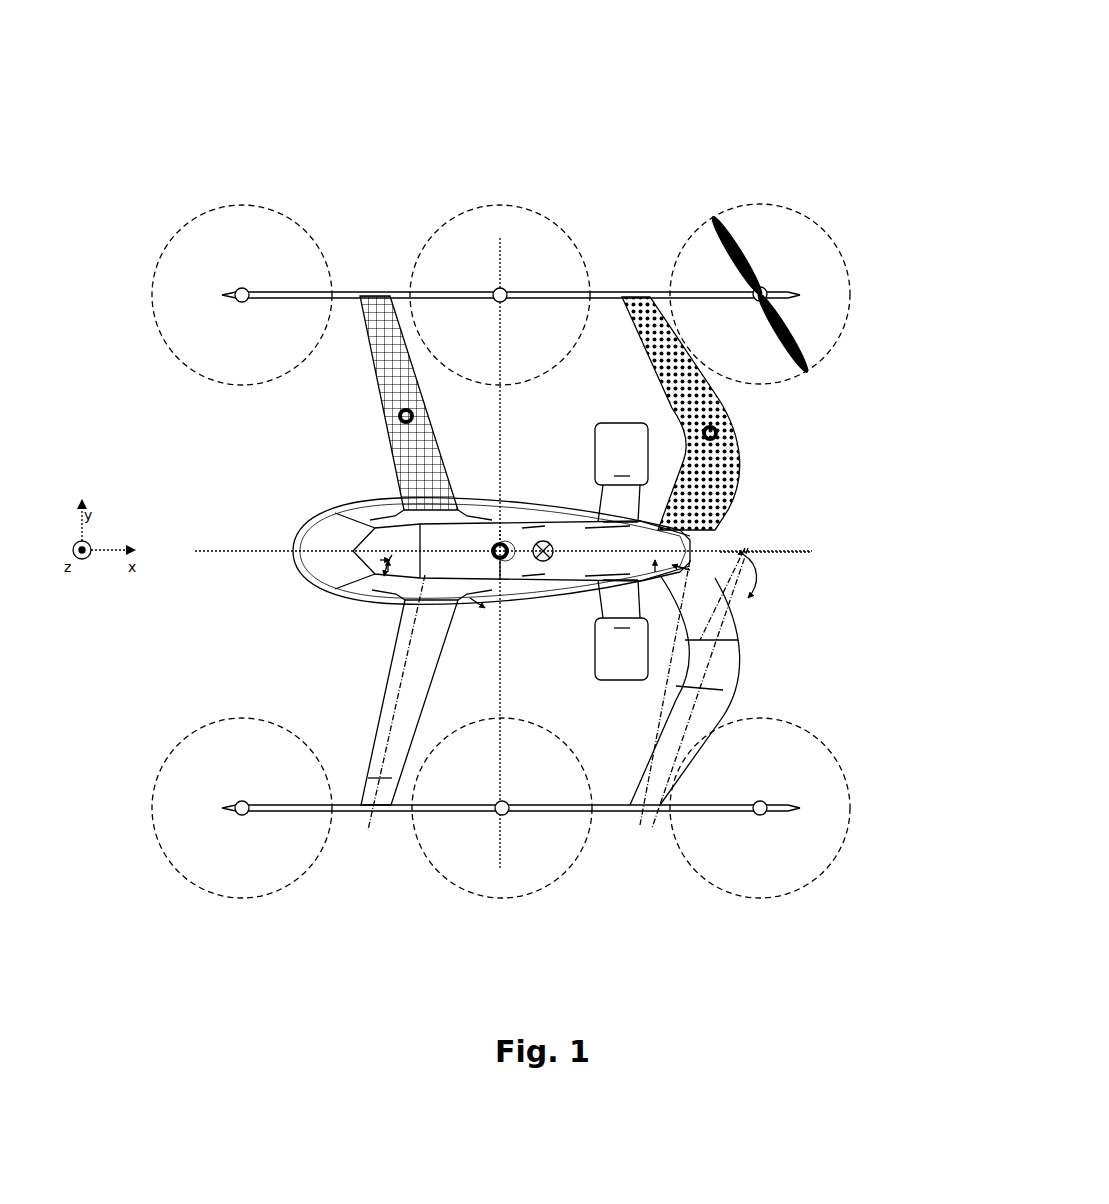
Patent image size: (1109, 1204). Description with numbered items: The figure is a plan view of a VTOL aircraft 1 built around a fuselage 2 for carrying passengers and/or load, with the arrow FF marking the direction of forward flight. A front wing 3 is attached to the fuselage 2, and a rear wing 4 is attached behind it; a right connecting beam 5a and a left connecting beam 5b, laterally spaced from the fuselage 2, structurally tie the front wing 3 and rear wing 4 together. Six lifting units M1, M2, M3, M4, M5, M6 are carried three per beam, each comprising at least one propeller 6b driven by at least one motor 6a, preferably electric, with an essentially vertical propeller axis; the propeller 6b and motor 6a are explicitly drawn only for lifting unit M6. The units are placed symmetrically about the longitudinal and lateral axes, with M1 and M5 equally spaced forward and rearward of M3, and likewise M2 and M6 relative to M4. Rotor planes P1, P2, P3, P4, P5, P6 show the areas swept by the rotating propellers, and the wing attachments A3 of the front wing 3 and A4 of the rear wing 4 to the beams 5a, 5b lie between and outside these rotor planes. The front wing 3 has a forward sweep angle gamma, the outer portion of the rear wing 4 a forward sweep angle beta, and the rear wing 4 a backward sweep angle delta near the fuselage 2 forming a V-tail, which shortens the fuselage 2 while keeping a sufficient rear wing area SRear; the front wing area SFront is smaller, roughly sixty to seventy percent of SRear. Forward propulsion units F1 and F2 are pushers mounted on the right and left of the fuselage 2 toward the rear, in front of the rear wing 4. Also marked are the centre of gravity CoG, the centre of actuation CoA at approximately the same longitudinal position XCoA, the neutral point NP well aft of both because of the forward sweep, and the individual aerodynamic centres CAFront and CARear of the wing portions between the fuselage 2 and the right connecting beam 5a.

The VTOL aircraft 1 is at (606, 132).
The fuselage 2 is at (345, 568).
The front wing 3 is at (388, 660).
The rear wing 4 is at (740, 495).
The right connecting beam 5a is at (340, 282).
The left connecting beam 5b is at (698, 815).
The motor 6a is at (762, 288).
The propeller 6b is at (718, 222).
The lifting unit M1 is at (225, 798).
The lifting unit M2 is at (225, 284).
The lifting unit M3 is at (492, 818).
The lifting unit M4 is at (492, 285).
The lifting unit M5 is at (773, 820).
The lifting unit M6 is at (768, 285).
The rotor plane P1 is at (152, 808).
The rotor plane P2 is at (172, 354).
The rotor plane P3 is at (567, 869).
The rotor plane P4 is at (552, 238).
The rotor plane P5 is at (853, 807).
The rotor plane P6 is at (853, 297).
The front wing attachment A3 is at (372, 300).
The rear wing attachment A4 is at (628, 300).
The forward propulsion unit F1 is at (621, 630).
The forward propulsion unit F2 is at (621, 472).
The centre of gravity CoG is at (503, 540).
The centre of actuation CoA is at (504, 562).
The neutral point NP is at (543, 564).
The longitudinal position of centre of actuation XCoA is at (506, 262).
The front wing area SFront is at (398, 419).
The rear wing area SRear is at (722, 404).
The aerodynamic centre of front wing CAFront is at (384, 378).
The aerodynamic centre of rear wing CARear is at (742, 438).
The rear wing sweep angle beta is at (750, 574).
The rear wing backward sweep angle delta is at (740, 626).
The front wing sweep angle gamma is at (378, 566).
The direction of forward flight FF is at (253, 542).